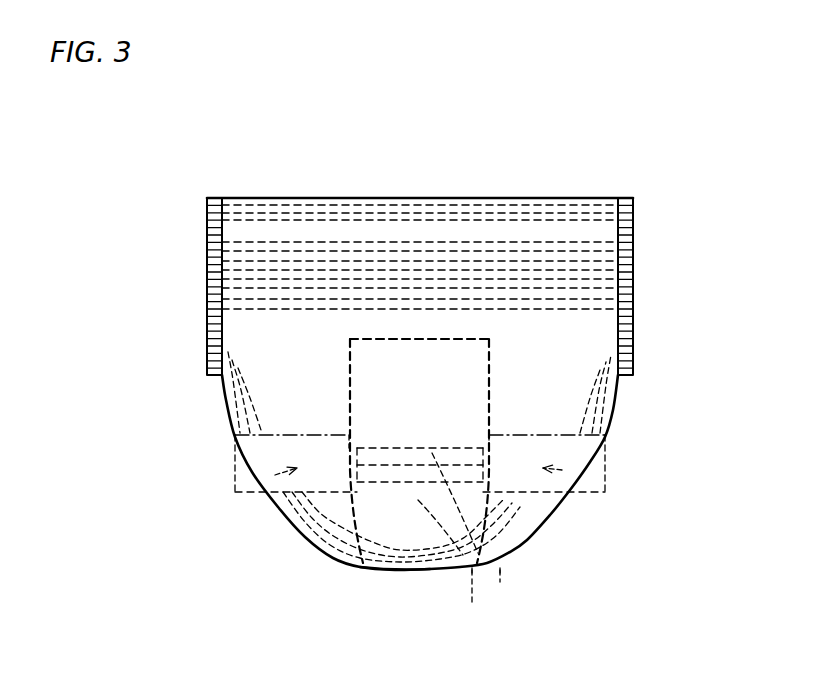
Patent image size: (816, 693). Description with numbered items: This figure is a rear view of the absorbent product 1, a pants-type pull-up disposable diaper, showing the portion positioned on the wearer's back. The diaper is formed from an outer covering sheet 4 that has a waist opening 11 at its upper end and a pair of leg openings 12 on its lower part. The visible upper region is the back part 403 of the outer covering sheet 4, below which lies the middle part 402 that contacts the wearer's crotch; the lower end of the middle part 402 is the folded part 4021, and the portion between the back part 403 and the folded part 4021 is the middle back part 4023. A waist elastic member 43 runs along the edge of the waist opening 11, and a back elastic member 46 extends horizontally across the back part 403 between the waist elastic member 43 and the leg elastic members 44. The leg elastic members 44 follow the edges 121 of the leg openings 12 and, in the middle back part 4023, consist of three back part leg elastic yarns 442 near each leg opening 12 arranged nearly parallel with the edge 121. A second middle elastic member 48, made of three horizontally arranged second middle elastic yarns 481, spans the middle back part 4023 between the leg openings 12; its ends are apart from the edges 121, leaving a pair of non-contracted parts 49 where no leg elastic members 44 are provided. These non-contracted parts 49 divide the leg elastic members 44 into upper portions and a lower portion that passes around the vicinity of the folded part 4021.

The absorbent product 1 is at (203, 157).
The waist opening 11 is at (421, 198).
The outer covering sheet 4 is at (481, 230).
The waist elastic member 43 is at (555, 212).
The back elastic member 46 is at (553, 270).
The back part 403 is at (255, 326).
The middle back part 4023 is at (325, 408).
The middle part 402 is at (122, 381).
The folded part 4021 is at (418, 578).
The leg openings 12 is at (275, 481).
The edges of the leg openings 121 is at (250, 470).
The leg elastic members 44 is at (250, 590).
The back part leg elastic yarns 442 is at (222, 413).
The non-contracted parts 49 is at (312, 458).
The second middle elastic member 48 is at (507, 618).
The second middle elastic yarns 481 is at (492, 602).